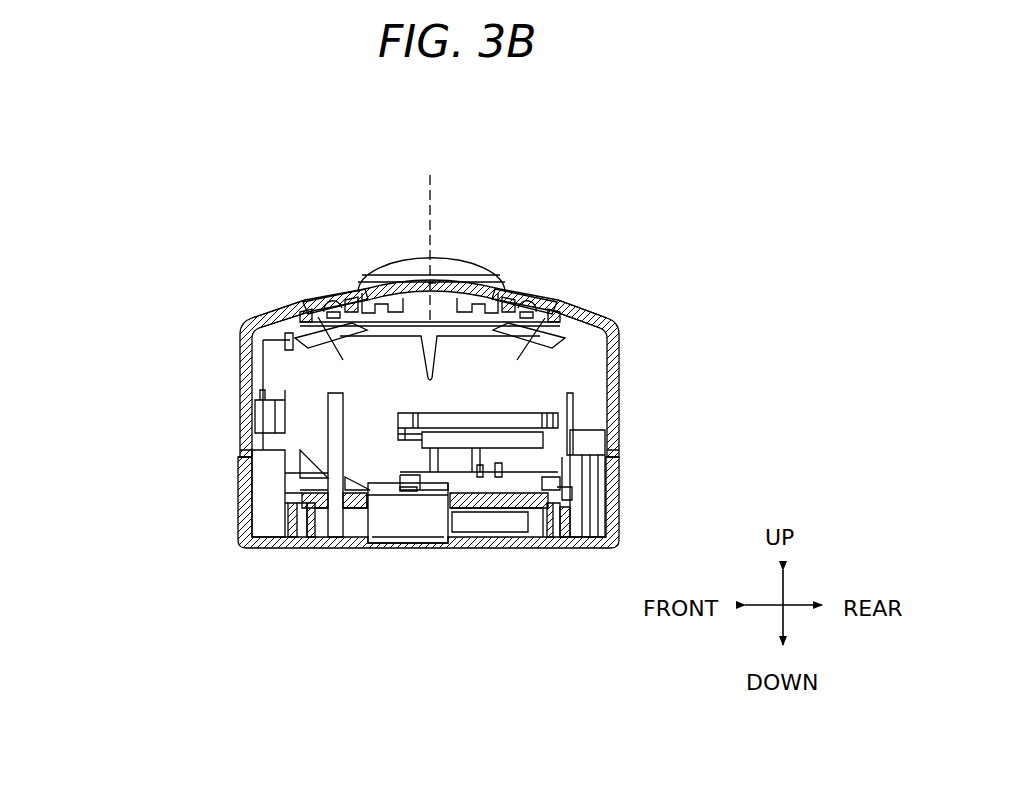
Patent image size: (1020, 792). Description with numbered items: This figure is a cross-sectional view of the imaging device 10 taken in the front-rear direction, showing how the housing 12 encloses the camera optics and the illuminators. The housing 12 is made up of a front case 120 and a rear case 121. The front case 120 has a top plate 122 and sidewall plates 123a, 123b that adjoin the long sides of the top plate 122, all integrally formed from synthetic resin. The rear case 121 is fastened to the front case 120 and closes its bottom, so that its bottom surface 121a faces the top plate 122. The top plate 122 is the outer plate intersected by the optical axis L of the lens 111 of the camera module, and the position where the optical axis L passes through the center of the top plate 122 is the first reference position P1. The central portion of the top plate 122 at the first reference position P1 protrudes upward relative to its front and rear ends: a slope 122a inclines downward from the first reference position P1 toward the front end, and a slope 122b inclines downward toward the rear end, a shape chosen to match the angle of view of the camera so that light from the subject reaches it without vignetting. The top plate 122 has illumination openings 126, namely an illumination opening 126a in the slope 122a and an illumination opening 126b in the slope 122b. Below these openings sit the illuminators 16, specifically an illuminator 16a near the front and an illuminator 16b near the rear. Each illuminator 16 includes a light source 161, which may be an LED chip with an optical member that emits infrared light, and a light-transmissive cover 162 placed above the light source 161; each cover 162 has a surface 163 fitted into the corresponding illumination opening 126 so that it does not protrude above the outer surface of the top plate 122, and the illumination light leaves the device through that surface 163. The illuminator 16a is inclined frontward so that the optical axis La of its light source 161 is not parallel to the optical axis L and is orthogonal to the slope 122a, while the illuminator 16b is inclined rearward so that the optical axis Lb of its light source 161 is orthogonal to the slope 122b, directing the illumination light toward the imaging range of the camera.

The imaging device 10 is at (158, 515).
The housing 12 is at (210, 582).
The illuminator 16 is at (504, 239).
The illuminator 16a is at (195, 147).
The illuminator 16b is at (672, 190).
The lens 111 is at (442, 257).
The front case 120 is at (240, 392).
The rear case 121 is at (623, 477).
The bottom surface 121a is at (435, 547).
The top plate 122 is at (475, 309).
The slope 122a is at (260, 318).
The slope 122b is at (598, 303).
The sidewall plate 123a is at (235, 450).
The sidewall plate 123b is at (625, 410).
The illumination opening 126 is at (481, 204).
The illumination opening 126a is at (338, 297).
The illumination opening 126b is at (520, 297).
The light source 161 is at (305, 300).
The cover 162 is at (312, 300).
The surface 163 is at (320, 298).
The optical axis L is at (431, 175).
The optical axis La is at (326, 278).
The optical axis Lb is at (540, 280).
The first reference position P1 is at (433, 282).